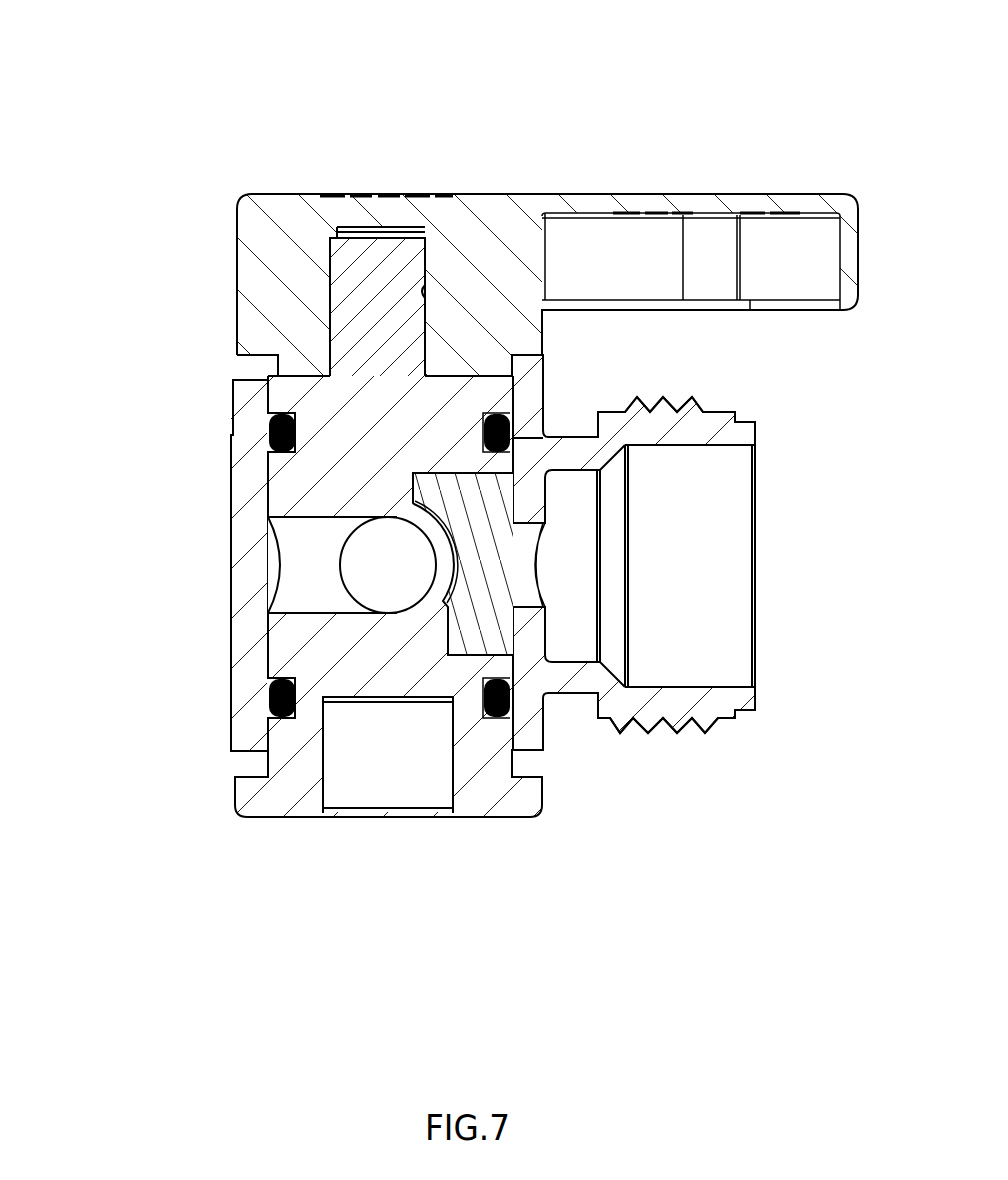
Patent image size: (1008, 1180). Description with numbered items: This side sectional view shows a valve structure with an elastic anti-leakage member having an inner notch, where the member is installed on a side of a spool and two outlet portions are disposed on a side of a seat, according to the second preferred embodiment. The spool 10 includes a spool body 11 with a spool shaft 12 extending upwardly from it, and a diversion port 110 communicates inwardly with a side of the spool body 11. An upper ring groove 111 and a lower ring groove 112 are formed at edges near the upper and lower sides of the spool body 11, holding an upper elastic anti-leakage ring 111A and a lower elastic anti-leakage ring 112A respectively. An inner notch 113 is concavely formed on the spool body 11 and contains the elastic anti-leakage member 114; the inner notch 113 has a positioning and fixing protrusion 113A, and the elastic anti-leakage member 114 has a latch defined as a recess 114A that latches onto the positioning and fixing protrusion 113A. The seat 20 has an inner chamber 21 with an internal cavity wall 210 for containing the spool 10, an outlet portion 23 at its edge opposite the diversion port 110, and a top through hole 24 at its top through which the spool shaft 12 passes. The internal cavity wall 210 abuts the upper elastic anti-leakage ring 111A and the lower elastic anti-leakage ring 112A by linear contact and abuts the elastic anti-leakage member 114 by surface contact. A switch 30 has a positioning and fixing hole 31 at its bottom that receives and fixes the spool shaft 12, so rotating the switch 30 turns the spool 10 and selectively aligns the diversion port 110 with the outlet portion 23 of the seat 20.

The spool 10 is at (250, 858).
The spool body 11 is at (505, 348).
The spool shaft 12 is at (340, 318).
The seat 20 is at (714, 374).
The inner chamber 21 is at (230, 715).
The outlet portion 23 is at (737, 553).
The top through hole 24 is at (253, 378).
The switch 30 is at (541, 163).
The positioning and fixing hole 31 is at (335, 230).
The diversion port 110 is at (363, 557).
The upper ring groove 111 is at (290, 413).
The upper elastic anti-leakage ring 111A is at (230, 440).
The lower ring groove 112 is at (487, 717).
The lower elastic anti-leakage ring 112A is at (537, 753).
The inner notch 113 is at (455, 612).
The positioning and fixing protrusion 113A is at (475, 540).
The elastic anti-leakage member 114 is at (480, 513).
The recess 114A is at (550, 523).
The internal cavity wall 210 is at (272, 562).